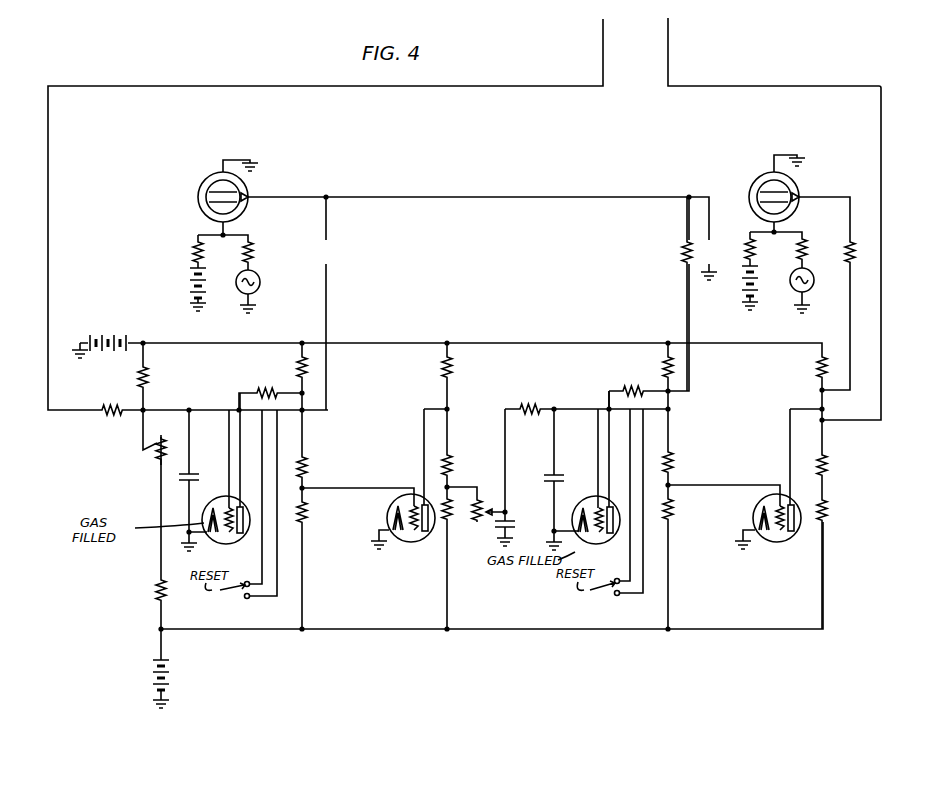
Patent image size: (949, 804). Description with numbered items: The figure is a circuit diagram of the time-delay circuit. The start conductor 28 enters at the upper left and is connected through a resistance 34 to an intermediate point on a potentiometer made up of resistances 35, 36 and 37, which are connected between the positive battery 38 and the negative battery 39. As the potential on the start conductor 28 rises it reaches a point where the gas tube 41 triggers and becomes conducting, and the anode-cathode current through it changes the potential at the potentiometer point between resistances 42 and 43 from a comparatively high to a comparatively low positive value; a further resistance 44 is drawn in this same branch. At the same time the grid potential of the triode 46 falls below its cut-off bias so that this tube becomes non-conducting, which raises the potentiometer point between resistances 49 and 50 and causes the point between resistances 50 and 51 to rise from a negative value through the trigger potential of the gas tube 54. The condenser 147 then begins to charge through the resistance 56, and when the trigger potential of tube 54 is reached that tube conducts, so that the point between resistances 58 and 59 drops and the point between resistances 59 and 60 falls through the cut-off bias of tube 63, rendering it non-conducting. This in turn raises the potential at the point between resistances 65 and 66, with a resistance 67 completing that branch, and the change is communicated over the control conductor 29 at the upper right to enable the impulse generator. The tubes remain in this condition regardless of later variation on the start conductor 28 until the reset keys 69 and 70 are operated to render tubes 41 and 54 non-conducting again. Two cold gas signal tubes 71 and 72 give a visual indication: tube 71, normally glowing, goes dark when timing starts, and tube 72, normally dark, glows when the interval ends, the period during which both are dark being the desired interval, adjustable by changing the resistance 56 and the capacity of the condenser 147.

The start conductor 28 is at (48, 212).
The control conductor 29 is at (884, 367).
The resistance 34 is at (112, 405).
The resistance 35 is at (150, 377).
The resistance 36 is at (156, 467).
The resistance 37 is at (156, 588).
The positive battery 38 is at (104, 335).
The negative battery 39 is at (152, 680).
The gas tube 41 is at (233, 544).
The resistance 42 is at (296, 367).
The resistance 43 is at (310, 463).
The resistor 44 is at (310, 510).
The triode 46 is at (417, 542).
The resistance 49 is at (455, 365).
The resistance 50 is at (455, 462).
The resistance 51 is at (455, 518).
The gas tube 54 is at (603, 543).
The resistance 56 is at (480, 498).
The resistance 58 is at (660, 366).
The resistance 59 is at (676, 462).
The resistance 60 is at (676, 507).
The tube 63 is at (783, 542).
The resistance 65 is at (815, 366).
The resistance 66 is at (830, 462).
The resistor 67 is at (830, 507).
The reset key 69 is at (216, 598).
The reset key 70 is at (584, 596).
The cold gas signal tube 71 is at (198, 197).
The cold gas signal tube 72 is at (752, 184).
The condenser 147 is at (515, 530).